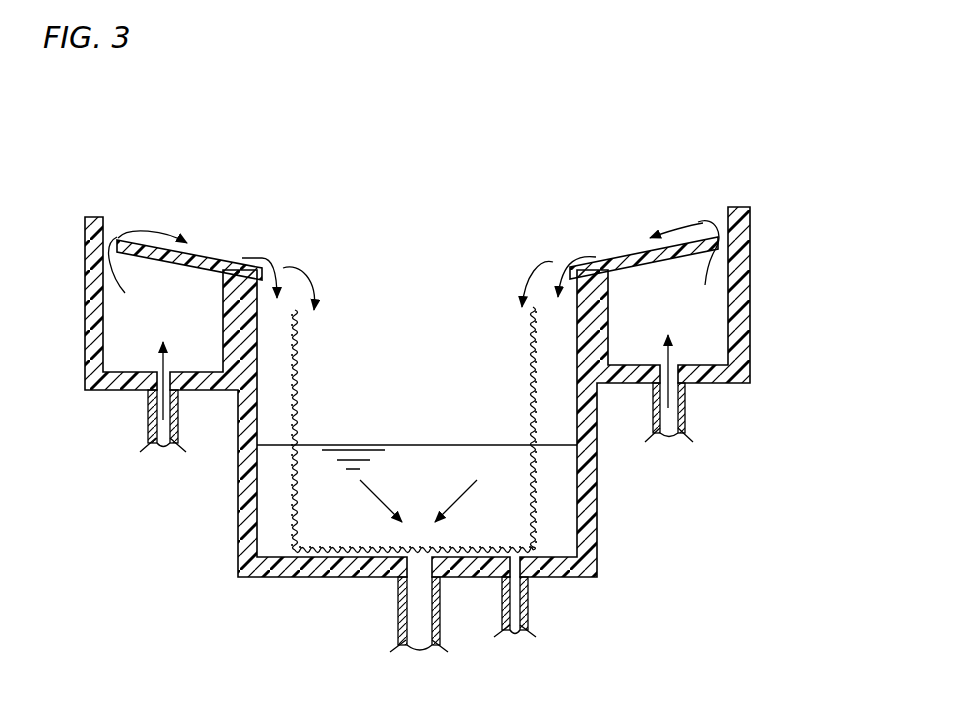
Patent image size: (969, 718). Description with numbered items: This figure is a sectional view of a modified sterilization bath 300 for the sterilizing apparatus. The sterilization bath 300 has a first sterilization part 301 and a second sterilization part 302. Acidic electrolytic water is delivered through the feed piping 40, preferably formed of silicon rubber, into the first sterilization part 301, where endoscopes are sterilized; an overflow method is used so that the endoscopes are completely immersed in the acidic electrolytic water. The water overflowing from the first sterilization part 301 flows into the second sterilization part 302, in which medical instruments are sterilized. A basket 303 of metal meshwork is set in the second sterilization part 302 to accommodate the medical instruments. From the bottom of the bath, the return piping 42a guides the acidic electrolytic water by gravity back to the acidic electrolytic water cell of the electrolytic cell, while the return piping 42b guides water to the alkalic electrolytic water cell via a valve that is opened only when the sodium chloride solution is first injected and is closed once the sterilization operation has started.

The sterilization bath 300 is at (606, 188).
The first sterilization part 301 is at (720, 313).
The second sterilization part 302 is at (512, 413).
The basket 303 is at (300, 375).
The feed piping 40 is at (148, 411).
The return piping 42a is at (398, 605).
The return piping 42b is at (530, 600).